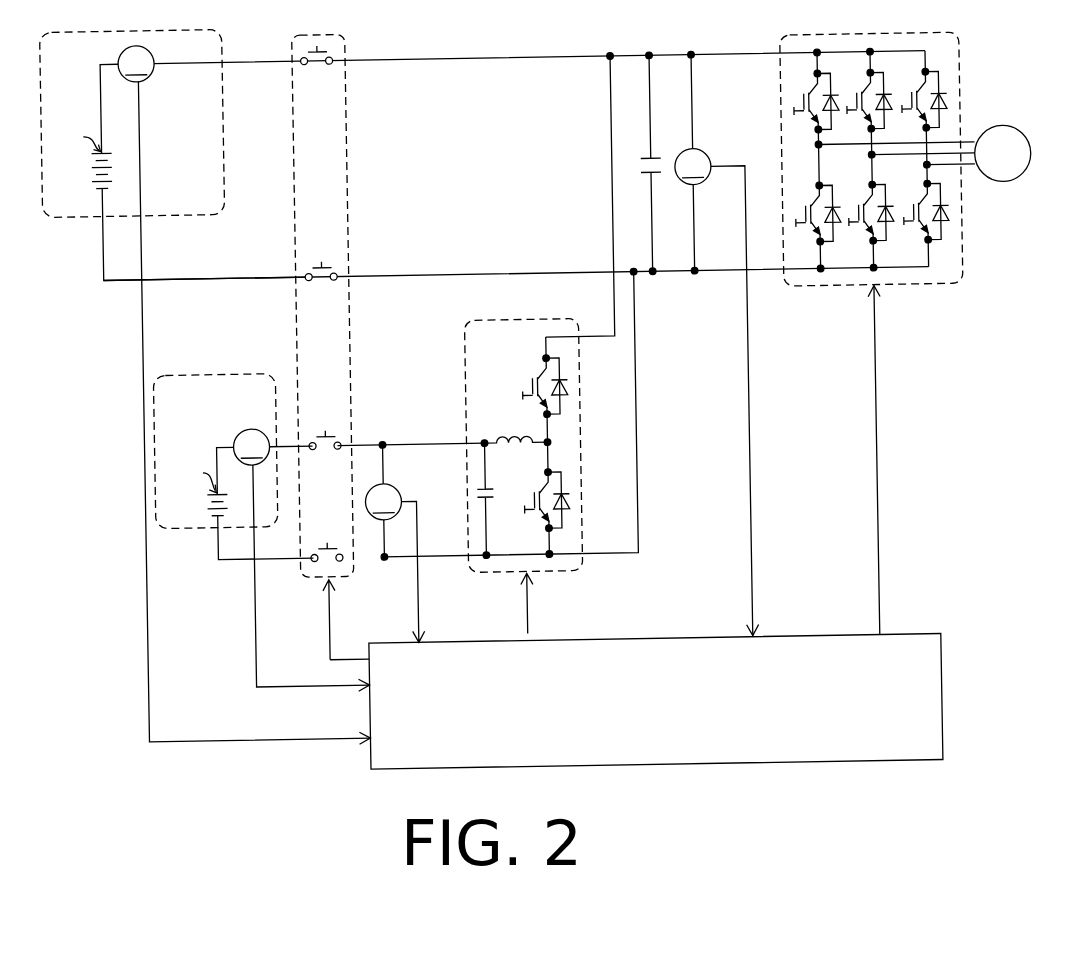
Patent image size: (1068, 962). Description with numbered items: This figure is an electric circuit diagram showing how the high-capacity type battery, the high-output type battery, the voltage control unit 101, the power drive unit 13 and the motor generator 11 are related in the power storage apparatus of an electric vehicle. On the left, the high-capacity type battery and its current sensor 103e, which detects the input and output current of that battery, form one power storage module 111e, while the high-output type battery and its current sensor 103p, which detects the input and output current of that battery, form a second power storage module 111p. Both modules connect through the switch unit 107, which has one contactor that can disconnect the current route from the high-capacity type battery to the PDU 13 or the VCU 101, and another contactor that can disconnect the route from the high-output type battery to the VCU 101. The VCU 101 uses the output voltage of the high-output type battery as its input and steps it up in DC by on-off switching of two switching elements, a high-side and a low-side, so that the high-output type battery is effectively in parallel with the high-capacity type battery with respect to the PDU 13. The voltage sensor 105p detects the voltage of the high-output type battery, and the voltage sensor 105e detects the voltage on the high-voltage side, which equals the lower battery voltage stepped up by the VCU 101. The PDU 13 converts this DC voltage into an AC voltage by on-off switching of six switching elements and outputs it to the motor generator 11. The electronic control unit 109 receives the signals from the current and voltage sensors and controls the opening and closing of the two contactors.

The current sensor 103e is at (148, 71).
The power storage module 111e is at (70, 208).
The switch unit 107 is at (292, 326).
The current sensor 103p is at (232, 427).
The power storage module 111p is at (190, 521).
The voltage control unit 101 is at (460, 356).
The voltage sensor 105p is at (391, 487).
The voltage sensor 105e is at (705, 152).
The power drive unit 13 is at (920, 289).
The motor generator 11 is at (999, 189).
The electronic control unit 109 is at (931, 700).